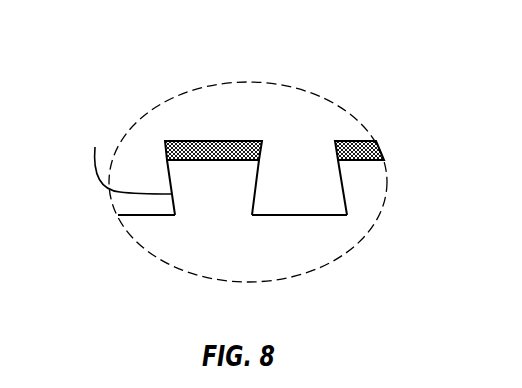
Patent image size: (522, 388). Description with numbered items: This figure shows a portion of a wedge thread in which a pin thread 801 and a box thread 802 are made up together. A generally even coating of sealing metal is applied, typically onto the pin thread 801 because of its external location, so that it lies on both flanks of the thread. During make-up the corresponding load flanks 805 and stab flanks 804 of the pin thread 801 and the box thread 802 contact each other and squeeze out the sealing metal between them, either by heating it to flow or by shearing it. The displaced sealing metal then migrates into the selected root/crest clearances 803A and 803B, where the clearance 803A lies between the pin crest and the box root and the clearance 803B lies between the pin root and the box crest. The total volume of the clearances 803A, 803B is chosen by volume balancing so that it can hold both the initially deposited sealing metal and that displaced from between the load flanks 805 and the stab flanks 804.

The pin thread 801 is at (217, 188).
The box thread 802 is at (305, 158).
The selected root/crest clearance 803A is at (208, 140).
The selected root/crest clearance 803B is at (298, 217).
The stab flanks 804 is at (127, 165).
The load flanks 805 is at (258, 176).